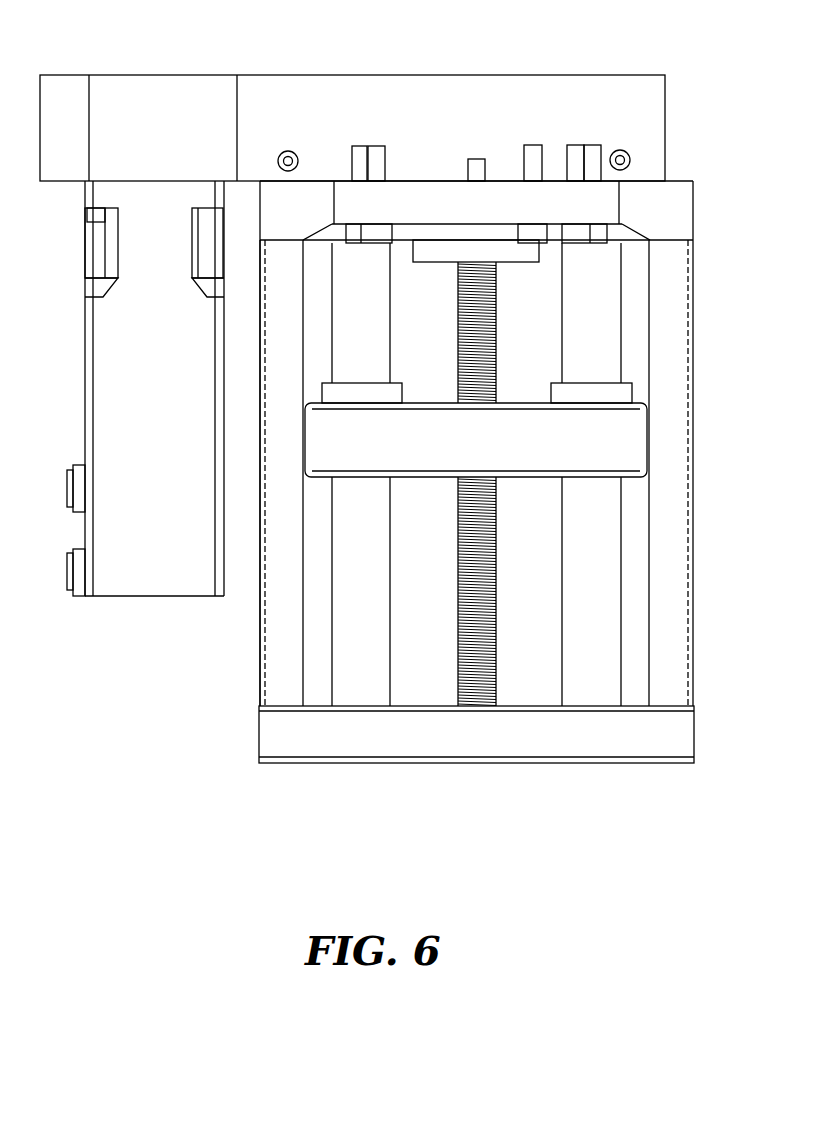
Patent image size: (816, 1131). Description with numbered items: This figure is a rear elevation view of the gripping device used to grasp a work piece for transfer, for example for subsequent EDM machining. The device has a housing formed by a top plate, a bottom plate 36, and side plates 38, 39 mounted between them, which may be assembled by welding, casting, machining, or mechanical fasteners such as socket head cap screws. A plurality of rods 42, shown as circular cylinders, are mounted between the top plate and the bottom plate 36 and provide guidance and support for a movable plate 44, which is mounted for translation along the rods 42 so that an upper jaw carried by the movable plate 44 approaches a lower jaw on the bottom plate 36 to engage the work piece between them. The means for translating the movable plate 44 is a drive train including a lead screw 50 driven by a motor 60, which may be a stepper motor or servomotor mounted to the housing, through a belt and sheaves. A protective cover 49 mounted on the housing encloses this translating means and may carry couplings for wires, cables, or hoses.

The bottom plate 36 is at (683, 732).
The side plate 38 is at (682, 366).
The side plate 39 is at (273, 667).
The rods 42 is at (363, 309).
The movable plate 44 is at (525, 462).
The protective cover 49 is at (160, 80).
The lead screw 50 is at (463, 598).
The motor 60 is at (103, 378).